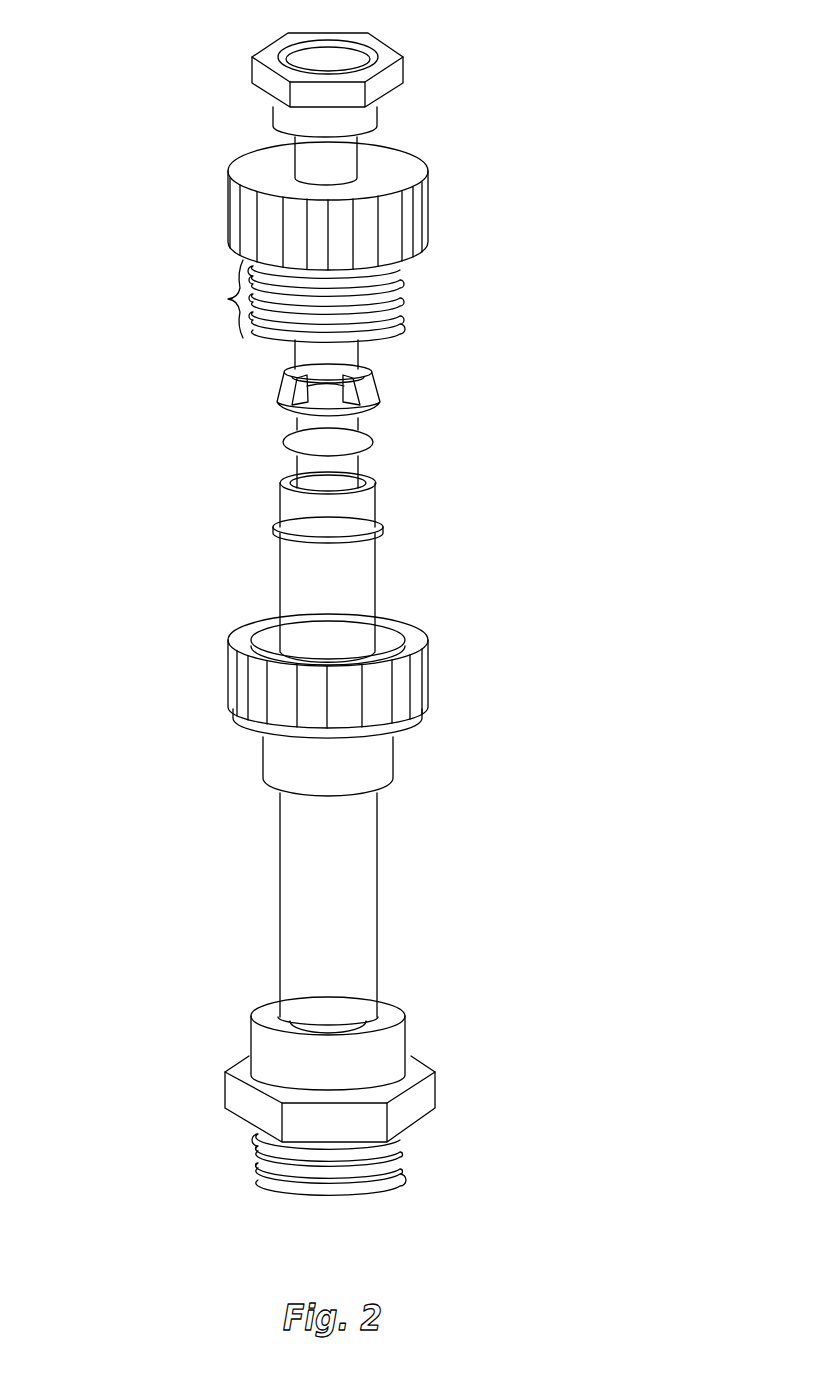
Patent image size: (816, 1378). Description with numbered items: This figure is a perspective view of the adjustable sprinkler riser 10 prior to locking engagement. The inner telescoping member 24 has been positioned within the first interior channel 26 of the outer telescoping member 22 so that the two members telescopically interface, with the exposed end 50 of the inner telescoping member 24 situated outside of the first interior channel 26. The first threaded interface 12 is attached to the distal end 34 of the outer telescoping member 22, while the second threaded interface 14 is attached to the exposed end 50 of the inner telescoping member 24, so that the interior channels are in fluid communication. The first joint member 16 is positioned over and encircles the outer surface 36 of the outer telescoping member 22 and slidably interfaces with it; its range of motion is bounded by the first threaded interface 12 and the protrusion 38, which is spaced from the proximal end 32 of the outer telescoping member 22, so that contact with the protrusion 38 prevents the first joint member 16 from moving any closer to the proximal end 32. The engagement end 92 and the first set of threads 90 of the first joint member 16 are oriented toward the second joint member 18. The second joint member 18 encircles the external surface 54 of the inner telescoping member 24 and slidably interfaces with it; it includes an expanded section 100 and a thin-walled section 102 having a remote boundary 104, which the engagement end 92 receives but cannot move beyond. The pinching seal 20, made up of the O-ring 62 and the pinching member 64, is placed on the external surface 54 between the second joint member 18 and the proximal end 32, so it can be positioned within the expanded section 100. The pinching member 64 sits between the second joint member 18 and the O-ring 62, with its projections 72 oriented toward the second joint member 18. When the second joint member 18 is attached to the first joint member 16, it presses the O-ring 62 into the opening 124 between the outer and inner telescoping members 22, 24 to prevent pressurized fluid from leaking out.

The adjustable sprinkler riser 10 is at (203, 82).
The first threaded interface 12 is at (423, 1097).
The second threaded interface 14 is at (393, 73).
The first joint member 16 is at (417, 673).
The second joint member 18 is at (417, 217).
The pinching seal 20 is at (388, 427).
The outer telescoping member 22 is at (370, 580).
The inner telescoping member 24 is at (362, 350).
The first interior channel 26 is at (370, 470).
The proximal end 32 is at (277, 477).
The distal end 34 is at (422, 1015).
The outer surface 36 is at (352, 862).
The protrusion 38 is at (380, 518).
The exposed end 50 is at (422, 130).
The external surface 54 is at (294, 459).
The O-ring 62 is at (288, 432).
The pinching member 64 is at (285, 377).
The projections 72 is at (326, 393).
The first set of threads 90 is at (388, 637).
The engagement end 92 is at (245, 637).
The expanded section 100 is at (393, 290).
The thin-walled section 102 is at (228, 298).
The remote boundary 104 is at (240, 260).
The opening 124 is at (310, 465).